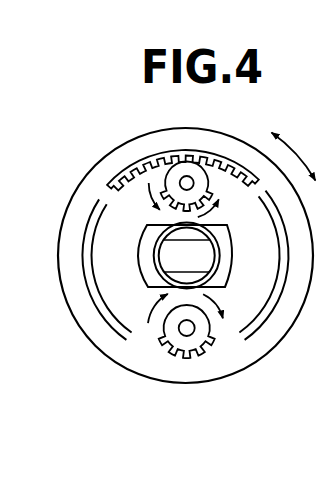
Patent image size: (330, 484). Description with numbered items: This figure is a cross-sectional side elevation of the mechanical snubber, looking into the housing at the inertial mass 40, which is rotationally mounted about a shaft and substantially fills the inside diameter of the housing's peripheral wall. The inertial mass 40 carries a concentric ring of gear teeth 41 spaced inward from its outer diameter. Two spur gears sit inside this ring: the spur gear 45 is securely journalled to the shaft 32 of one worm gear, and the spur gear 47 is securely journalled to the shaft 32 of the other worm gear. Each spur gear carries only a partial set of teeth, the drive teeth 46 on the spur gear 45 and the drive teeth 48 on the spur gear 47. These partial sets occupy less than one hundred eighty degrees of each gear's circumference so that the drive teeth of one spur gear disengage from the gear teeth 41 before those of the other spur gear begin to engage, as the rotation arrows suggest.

The inertial mass 40 is at (208, 140).
The gear teeth 41 is at (133, 172).
The shaft 32 is at (168, 178).
The spur gear 45 is at (204, 180).
The spur gear 47 is at (207, 324).
The drive teeth 46 is at (200, 210).
The drive teeth 48 is at (201, 357).